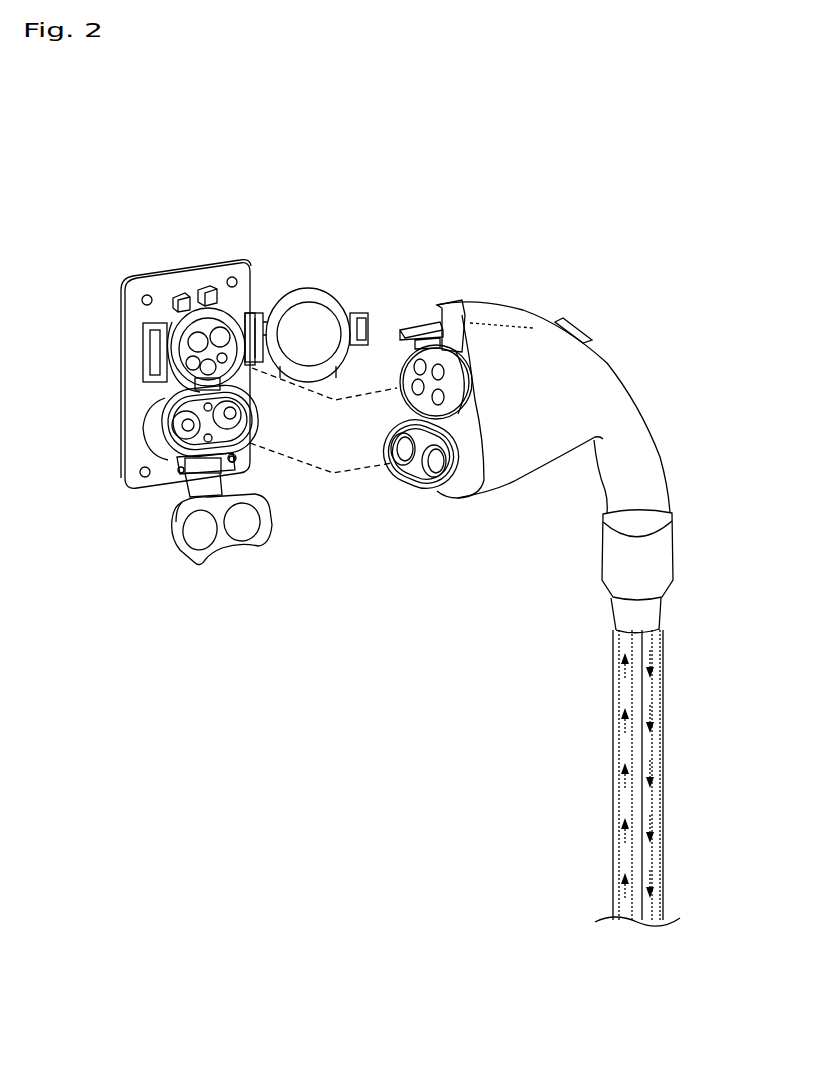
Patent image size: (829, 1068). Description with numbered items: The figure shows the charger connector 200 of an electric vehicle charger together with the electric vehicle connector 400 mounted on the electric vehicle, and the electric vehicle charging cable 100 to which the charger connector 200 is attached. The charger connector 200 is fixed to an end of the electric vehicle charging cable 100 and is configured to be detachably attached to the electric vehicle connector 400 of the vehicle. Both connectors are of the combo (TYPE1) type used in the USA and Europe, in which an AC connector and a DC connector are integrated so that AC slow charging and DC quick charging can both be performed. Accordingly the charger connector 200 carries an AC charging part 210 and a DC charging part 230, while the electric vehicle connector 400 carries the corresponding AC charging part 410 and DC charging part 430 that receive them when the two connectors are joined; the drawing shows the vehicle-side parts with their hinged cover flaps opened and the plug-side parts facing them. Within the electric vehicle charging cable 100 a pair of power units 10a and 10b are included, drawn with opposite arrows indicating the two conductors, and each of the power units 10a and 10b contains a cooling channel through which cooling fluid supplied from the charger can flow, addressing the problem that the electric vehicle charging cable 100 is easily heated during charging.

The electric vehicle charging cable 100 is at (662, 768).
The power unit 10a is at (617, 733).
The power unit 10b is at (655, 702).
The charger connector 200 is at (517, 302).
The AC charging part 210 is at (393, 370).
The DC charging part 230 is at (400, 488).
The electric vehicle connector 400 is at (277, 262).
The AC charging part 410 is at (238, 263).
The DC charging part 430 is at (265, 463).